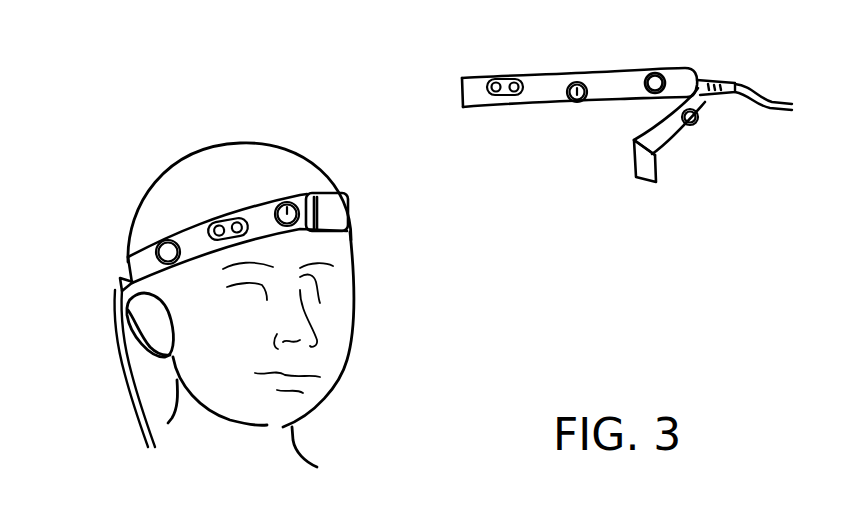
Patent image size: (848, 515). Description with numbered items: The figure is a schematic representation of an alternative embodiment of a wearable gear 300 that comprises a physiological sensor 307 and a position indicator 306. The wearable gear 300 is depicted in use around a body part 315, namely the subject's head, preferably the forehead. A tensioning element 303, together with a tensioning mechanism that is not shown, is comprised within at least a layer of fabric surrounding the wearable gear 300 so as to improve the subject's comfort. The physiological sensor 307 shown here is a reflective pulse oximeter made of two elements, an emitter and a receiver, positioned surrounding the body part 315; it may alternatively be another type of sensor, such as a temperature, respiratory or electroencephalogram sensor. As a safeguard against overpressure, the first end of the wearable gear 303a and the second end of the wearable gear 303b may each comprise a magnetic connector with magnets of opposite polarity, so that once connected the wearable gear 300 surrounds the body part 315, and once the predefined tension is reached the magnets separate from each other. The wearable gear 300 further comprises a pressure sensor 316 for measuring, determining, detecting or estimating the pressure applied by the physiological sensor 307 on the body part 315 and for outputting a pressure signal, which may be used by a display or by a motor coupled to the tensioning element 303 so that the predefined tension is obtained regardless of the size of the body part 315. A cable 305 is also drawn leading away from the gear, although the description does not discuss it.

The wearable gear 300 is at (143, 258).
The tensioning element 303 is at (338, 215).
The first end of the wearable gear 303a is at (470, 90).
The second end of the wearable gear 303b is at (647, 172).
The cable 305 is at (130, 375).
The position indicator 306 is at (287, 212).
The physiological sensor 307 is at (226, 226).
The body part 315 is at (337, 383).
The pressure sensor 316 is at (166, 250).